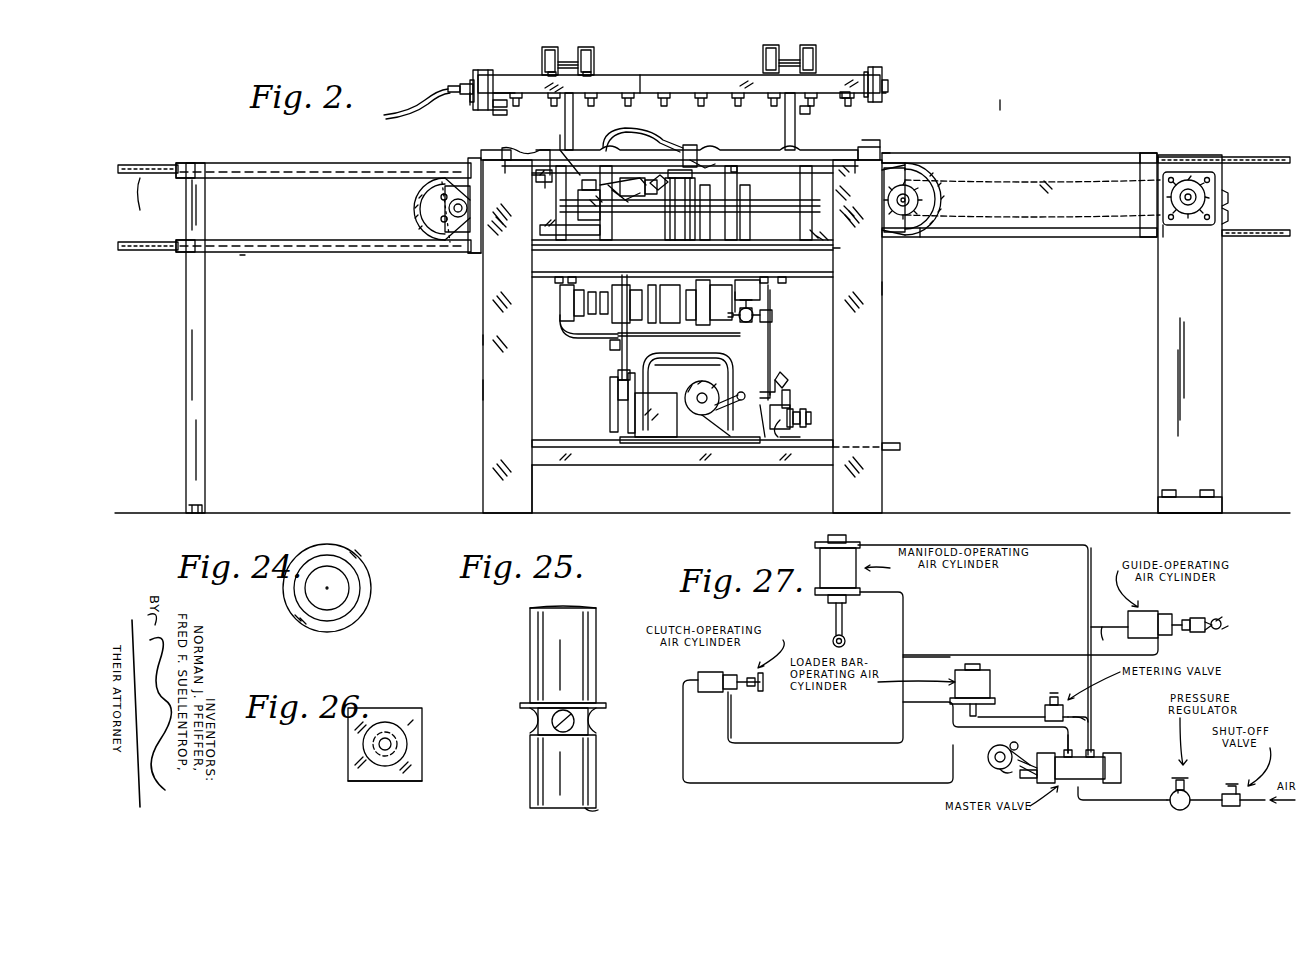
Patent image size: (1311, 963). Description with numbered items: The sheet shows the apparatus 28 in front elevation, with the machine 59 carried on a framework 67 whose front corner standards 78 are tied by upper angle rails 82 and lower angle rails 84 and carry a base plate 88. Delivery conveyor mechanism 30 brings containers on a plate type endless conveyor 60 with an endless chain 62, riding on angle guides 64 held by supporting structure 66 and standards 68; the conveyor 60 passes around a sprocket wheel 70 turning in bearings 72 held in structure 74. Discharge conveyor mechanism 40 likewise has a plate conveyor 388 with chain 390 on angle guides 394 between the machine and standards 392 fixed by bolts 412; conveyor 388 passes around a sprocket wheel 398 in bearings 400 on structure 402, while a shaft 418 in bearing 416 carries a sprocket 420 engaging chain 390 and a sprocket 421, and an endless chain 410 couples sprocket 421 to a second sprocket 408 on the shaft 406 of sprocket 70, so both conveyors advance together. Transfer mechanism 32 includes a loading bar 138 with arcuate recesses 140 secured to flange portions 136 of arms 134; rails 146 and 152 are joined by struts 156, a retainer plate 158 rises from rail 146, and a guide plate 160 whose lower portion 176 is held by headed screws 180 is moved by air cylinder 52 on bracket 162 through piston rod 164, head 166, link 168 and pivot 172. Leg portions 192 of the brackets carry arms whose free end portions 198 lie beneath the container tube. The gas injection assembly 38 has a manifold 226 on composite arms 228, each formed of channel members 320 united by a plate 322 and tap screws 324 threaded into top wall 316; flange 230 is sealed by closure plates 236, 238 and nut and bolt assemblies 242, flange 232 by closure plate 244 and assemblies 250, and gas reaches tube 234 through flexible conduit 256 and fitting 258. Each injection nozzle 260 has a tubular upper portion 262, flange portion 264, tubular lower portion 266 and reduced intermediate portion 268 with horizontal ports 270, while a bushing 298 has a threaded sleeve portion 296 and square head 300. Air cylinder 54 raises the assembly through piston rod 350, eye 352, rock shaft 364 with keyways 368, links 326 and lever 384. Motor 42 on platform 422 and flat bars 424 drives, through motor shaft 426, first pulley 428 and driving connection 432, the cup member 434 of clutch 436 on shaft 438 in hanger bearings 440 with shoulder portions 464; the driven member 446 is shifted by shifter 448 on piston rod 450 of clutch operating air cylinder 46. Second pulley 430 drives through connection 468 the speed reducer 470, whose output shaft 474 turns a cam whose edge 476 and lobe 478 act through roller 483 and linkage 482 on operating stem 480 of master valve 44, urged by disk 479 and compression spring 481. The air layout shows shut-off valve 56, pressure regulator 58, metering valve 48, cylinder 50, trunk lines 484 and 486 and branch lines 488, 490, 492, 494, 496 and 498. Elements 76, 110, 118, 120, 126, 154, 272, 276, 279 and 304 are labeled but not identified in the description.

In FIG. 2, the apparatus 28 is at (1004, 91).
In FIG. 2, the delivery conveyor mechanism 30 is at (320, 269).
In FIG. 2, the container transfer or loading mechanism 32 is at (898, 135).
In FIG. 2, the gas injection assembly 38 is at (864, 56).
In FIG. 2, the discharge conveyor mechanism 40 is at (1133, 143).
In FIG. 2, the motor 42 is at (710, 372).
In FIG. 2, the cam operated master air control valve assembly 44 is at (792, 410).
In FIG. 27, the cam operated master air control valve assembly 44 is at (1107, 752).
In FIG. 2, the clutch operating mechanism 46 is at (549, 291).
In FIG. 27, the clutch operating mechanism 46 is at (705, 675).
In FIG. 2, the air metering valve 48 is at (773, 316).
In FIG. 27, the air metering valve 48 is at (1047, 703).
In FIG. 2, the air pressure operated cylinder 50 is at (655, 245).
In FIG. 27, the air pressure operated cylinder 50 is at (978, 683).
In FIG. 2, the air pressure operated cylinder 52 is at (633, 178).
In FIG. 27, the air pressure operated cylinder 52 is at (1150, 615).
In FIG. 2, the air pressure operated cylinder 54 is at (693, 148).
In FIG. 27, the air pressure operated cylinder 54 is at (832, 571).
In FIG. 27, the shut-off valve 56 is at (1238, 790).
In FIG. 27, the gas pressure regulator 58 is at (1172, 792).
In FIG. 2, the machine 59 is at (475, 379).
In FIG. 2, the plate type endless conveyor 60 is at (160, 166).
In FIG. 2, the endless chain 62 is at (160, 240).
In FIG. 2, the angle guides 64 is at (328, 168).
In FIG. 2, the supporting structure 66 is at (466, 268).
In FIG. 2, the framework 67 is at (475, 327).
In FIG. 2, the standards 68 is at (195, 393).
In FIG. 2, the sprocket wheel 70 is at (945, 200).
In FIG. 2, the bearings 72 is at (935, 206).
In FIG. 2, the supporting structure 74 is at (915, 159).
In FIG. 2, the guide bracket 76 is at (880, 140).
In FIG. 2, the front corner standards 78 is at (488, 476).
In FIG. 2, the angle rails 82 is at (477, 267).
In FIG. 2, the angle rails 84 is at (552, 468).
In FIG. 2, the rectangular base plate 88 is at (838, 256).
In FIG. 2, the loader bar 110 is at (680, 262).
In FIG. 27, the loader bar 110 is at (962, 708).
In FIG. 2, the valve body 118 is at (752, 300).
In FIG. 2, the drive housing 120 is at (740, 292).
In FIG. 2, the bracket 126 is at (790, 278).
In FIG. 2, the arms 134 is at (535, 255).
In FIG. 2, the flange portions 136 is at (773, 178).
In FIG. 2, the loading bar 138 is at (555, 145).
In FIG. 2, the recesses 140 is at (612, 148).
In FIG. 2, the angle rail 146 is at (500, 155).
In FIG. 2, the rail 152 is at (605, 243).
In FIG. 2, the plate 154 is at (848, 212).
In FIG. 2, the perpendicular struts 156 is at (540, 210).
In FIG. 2, the guide or retainer plate 158 is at (536, 176).
In FIG. 2, the vertically movable guide plate 160 is at (528, 195).
In FIG. 2, the supporting bracket 162 is at (595, 185).
In FIG. 2, the reciprocable piston rod 164 is at (665, 178).
In FIG. 27, the reciprocable piston rod 164 is at (1198, 618).
In FIG. 27, the head 166 is at (1207, 630).
In FIG. 27, the link 168 is at (1222, 624).
In FIG. 2, the pivotal connection 172 is at (738, 182).
In FIG. 2, the lower portion 176 is at (880, 150).
In FIG. 2, the headed screw 180 is at (728, 140).
In FIG. 2, the upstanding leg portions 192 is at (548, 155).
In FIG. 2, the free end portions 198 is at (782, 245).
In FIG. 2, the manifold 226 is at (640, 80).
In FIG. 2, the composite arms 228 is at (604, 38).
In FIG. 2, the peripheral flange 230 is at (548, 85).
In FIG. 2, the flange 232 is at (880, 88).
In FIG. 2, the tube 234 is at (468, 100).
In FIG. 2, the first closure plate 236 is at (490, 70).
In FIG. 2, the second closure plate 238 is at (474, 80).
In FIG. 2, the nut and bolt assemblies 242 is at (464, 84).
In FIG. 2, the closure plate 244 is at (868, 78).
In FIG. 2, the nut and bolt assemblies 250 is at (890, 68).
In FIG. 2, the flexible conduit 256 is at (395, 102).
In FIG. 2, the fitting 258 is at (450, 86).
In FIG. 24, the injection nozzle 260 is at (373, 566).
In FIG. 25, the injection nozzle 260 is at (519, 655).
In FIG. 24, the tubular upper portion 262 is at (352, 600).
In FIG. 25, the tubular upper portion 262 is at (568, 612).
In FIG. 24, the annular laterally projecting flange portion 264 is at (322, 620).
In FIG. 25, the annular laterally projecting flange portion 264 is at (522, 702).
In FIG. 25, the tubular lower portion 266 is at (535, 785).
In FIG. 25, the intermediate tubular portion 268 is at (575, 714).
In FIG. 25, the horizontal ports 270 is at (535, 722).
In FIG. 2, the fitting 272 is at (508, 112).
In FIG. 2, the fitting 276 is at (850, 108).
In FIG. 25, the nozzle tip 279 is at (597, 810).
In FIG. 26, the internally threaded sleeve or shank portion 296 is at (388, 725).
In FIG. 26, the bushing 298 is at (338, 766).
In FIG. 26, the square head portion 300 is at (362, 781).
In FIG. 2, the support post 304 is at (665, 88).
In FIG. 2, the top wall 316 is at (650, 75).
In FIG. 2, the channel-shaped members 320 is at (550, 47).
In FIG. 2, the plate 322 is at (545, 93).
In FIG. 2, the tap screws 324 is at (595, 62).
In FIG. 2, the vertically disposed links 326 is at (630, 104).
In FIG. 27, the piston rod 350 is at (843, 618).
In FIG. 27, the eye or bearing member 352 is at (846, 638).
In FIG. 2, the rock shaft 364 is at (730, 240).
In FIG. 2, the keyways 368 is at (828, 245).
In FIG. 2, the vertically disposed lever 384 is at (548, 70).
In FIG. 2, the plate type endless conveyor 388 is at (1270, 157).
In FIG. 2, the endless chain 390 is at (420, 228).
In FIG. 2, the standards 392 is at (1210, 346).
In FIG. 2, the angle guides 394 is at (1076, 158).
In FIG. 2, the sprocket wheel 398 is at (428, 213).
In FIG. 2, the bearings 400 is at (445, 240).
In FIG. 2, the supporting structure 402 is at (427, 209).
In FIG. 2, the shaft 406 is at (905, 218).
In FIG. 2, the second sprocket 408 is at (945, 180).
In FIG. 2, the endless chain 410 is at (1094, 222).
In FIG. 2, the bolts 412 is at (1208, 490).
In FIG. 2, the bearing 416 is at (1185, 225).
In FIG. 2, the horizontally disposed shaft 418 is at (1192, 182).
In FIG. 2, the sprocket 420 is at (1232, 200).
In FIG. 2, the sprocket 421 is at (1170, 196).
In FIG. 2, the platform 422 is at (645, 447).
In FIG. 2, the flat bars 424 is at (555, 440).
In FIG. 2, the motor shaft 426 is at (607, 396).
In FIG. 2, the first pulley 428 is at (636, 372).
In FIG. 2, the second pulley 430 is at (612, 383).
In FIG. 2, the driving connection 432 is at (622, 360).
In FIG. 2, the cup member 434 is at (612, 350).
In FIG. 2, the friction disc type clutch 436 is at (579, 328).
In FIG. 2, the shaft 438 is at (560, 305).
In FIG. 2, the hanger bearings 440 is at (656, 290).
In FIG. 2, the driven member 446 is at (681, 239).
In FIG. 27, the shifter 448 is at (765, 690).
In FIG. 27, the piston rod 450 is at (752, 688).
In FIG. 2, the annular shoulder portions 464 is at (732, 305).
In FIG. 2, the driving connection 468 is at (612, 425).
In FIG. 2, the combined speed reducer and transmission device 470 is at (675, 374).
In FIG. 2, the output shaft 474 is at (748, 380).
In FIG. 27, the output shaft 474 is at (992, 753).
In FIG. 2, the peripheral edge 476 is at (700, 415).
In FIG. 27, the peripheral edge 476 is at (995, 766).
In FIG. 2, the cam lobe 478 is at (740, 445).
In FIG. 27, the cam lobe 478 is at (1010, 770).
In FIG. 2, the disk 479 is at (812, 414).
In FIG. 2, the operating stem 480 is at (762, 445).
In FIG. 27, the operating stem 480 is at (1030, 782).
In FIG. 2, the compression spring 481 is at (795, 440).
In FIG. 2, the linkage 482 is at (780, 393).
In FIG. 27, the linkage 482 is at (1018, 772).
In FIG. 2, the roller 483 is at (786, 378).
In FIG. 27, the roller 483 is at (1020, 744).
In FIG. 2, the trunk air line 484 is at (635, 130).
In FIG. 27, the trunk air line 484 is at (1090, 548).
In FIG. 2, the trunk air line 486 is at (801, 389).
In FIG. 27, the trunk air line 486 is at (728, 712).
In FIG. 2, the branch line 488 is at (605, 340).
In FIG. 27, the branch line 488 is at (785, 783).
In FIG. 2, the branch line 490 is at (650, 213).
In FIG. 27, the branch line 490 is at (1045, 676).
In FIG. 2, the branch line 492 is at (570, 160).
In FIG. 27, the branch line 492 is at (1100, 630).
In FIG. 27, the branch line 494 is at (943, 702).
In FIG. 27, the branch line 496 is at (1010, 637).
In FIG. 27, the branch line 498 is at (908, 600).